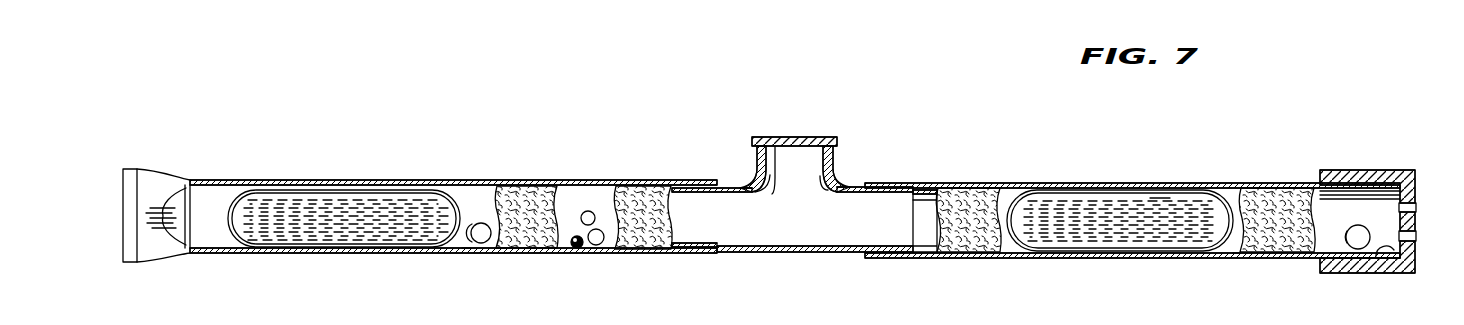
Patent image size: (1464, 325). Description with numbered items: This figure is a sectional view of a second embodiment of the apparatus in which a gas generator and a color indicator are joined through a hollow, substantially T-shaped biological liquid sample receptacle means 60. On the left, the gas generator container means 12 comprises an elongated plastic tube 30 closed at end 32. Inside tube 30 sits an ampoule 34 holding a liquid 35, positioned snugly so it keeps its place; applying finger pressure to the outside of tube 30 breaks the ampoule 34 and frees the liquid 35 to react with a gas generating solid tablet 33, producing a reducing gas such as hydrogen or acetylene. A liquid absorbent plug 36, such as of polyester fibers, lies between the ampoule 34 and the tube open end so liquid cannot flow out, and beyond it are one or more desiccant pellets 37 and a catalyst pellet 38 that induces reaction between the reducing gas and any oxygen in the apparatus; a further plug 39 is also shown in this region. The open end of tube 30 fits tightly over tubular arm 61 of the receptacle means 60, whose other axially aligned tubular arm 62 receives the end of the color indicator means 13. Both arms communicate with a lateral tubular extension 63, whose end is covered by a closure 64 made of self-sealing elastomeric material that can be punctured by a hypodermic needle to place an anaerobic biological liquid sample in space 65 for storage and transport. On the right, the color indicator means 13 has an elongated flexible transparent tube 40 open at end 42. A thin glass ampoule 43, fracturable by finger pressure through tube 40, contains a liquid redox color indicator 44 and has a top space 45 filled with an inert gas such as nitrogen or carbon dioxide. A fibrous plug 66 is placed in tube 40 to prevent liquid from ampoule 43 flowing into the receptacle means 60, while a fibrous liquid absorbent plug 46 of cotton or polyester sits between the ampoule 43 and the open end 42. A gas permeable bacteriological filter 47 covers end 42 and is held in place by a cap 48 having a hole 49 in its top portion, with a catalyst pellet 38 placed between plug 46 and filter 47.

The gas generator container means 12 is at (447, 152).
The color indicator means 13 is at (1106, 155).
The elongated plastic tube 30 is at (452, 254).
The closed end 32 is at (131, 168).
The gas generating solid tablet 33 is at (487, 243).
The ampoule 34 is at (340, 248).
The liquid 35 is at (283, 232).
The liquid absorbent plug 36 is at (560, 243).
The desiccant pellets 37 is at (587, 210).
The catalyst pellet 38 is at (600, 246).
The porous plug 39 is at (634, 200).
The elongated flexible transparent tube 40 is at (1241, 260).
The open end 42 is at (1362, 250).
The ampoule 43 is at (1050, 250).
The liquid redox color indicator 44 is at (1175, 238).
The top space 45 is at (1162, 198).
The fibrous liquid absorbent plug 46 is at (1290, 196).
The bacteriological filter 47 is at (1412, 240).
The cap 48 is at (1367, 180).
The hole 49 is at (1412, 207).
The biological liquid sample receptacle means 60 is at (792, 192).
The tubular arm 61 is at (704, 198).
The tubular arm 62 is at (891, 200).
The lateral tubular extension 63 is at (755, 162).
The closure 64 is at (803, 136).
The space 65 is at (786, 226).
The fibrous plug 66 is at (955, 243).